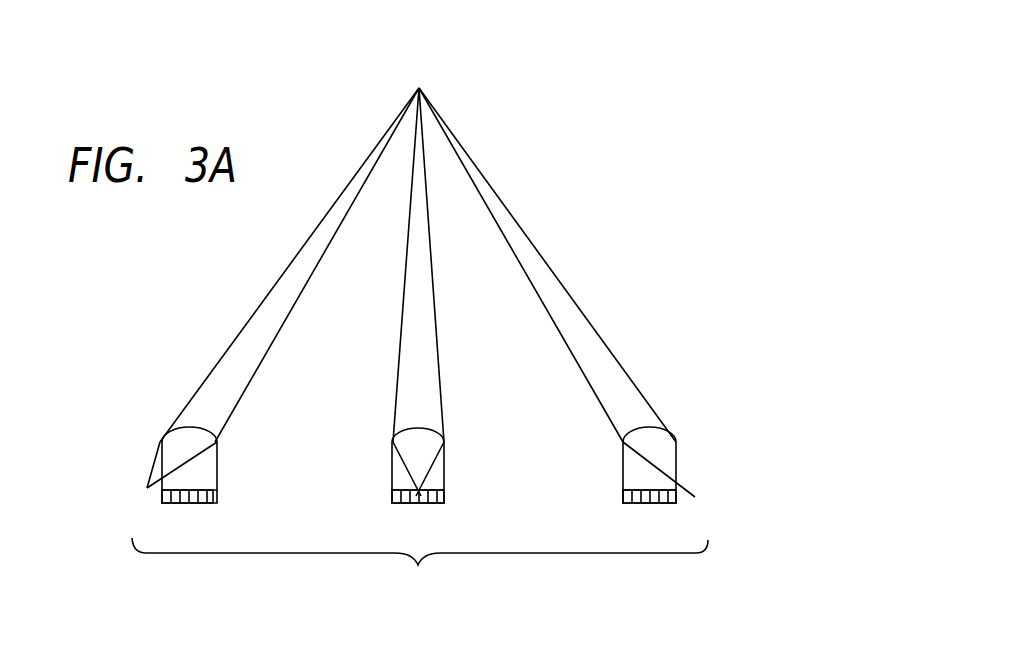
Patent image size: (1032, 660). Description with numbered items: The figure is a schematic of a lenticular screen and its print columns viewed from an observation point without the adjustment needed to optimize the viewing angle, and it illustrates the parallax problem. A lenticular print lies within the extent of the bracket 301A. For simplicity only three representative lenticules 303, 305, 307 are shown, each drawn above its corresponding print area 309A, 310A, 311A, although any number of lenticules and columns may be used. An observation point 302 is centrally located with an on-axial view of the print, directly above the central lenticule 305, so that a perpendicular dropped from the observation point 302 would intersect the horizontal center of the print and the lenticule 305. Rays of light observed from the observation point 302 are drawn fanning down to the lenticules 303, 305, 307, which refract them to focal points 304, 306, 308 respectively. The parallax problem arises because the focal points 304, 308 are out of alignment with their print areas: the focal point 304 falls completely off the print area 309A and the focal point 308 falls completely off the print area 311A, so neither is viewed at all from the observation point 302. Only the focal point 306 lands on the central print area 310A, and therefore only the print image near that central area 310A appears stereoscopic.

The bracket 301A is at (420, 570).
The observation point 302 is at (419, 88).
The lenticule 303 is at (217, 471).
The focal point 304 is at (147, 488).
The central lenticule 305 is at (445, 472).
The focal point 306 is at (418, 492).
The lenticule 307 is at (677, 459).
The focal point 308 is at (695, 497).
The print area 309A is at (196, 503).
The print area 310A is at (425, 503).
The print area 311A is at (657, 503).